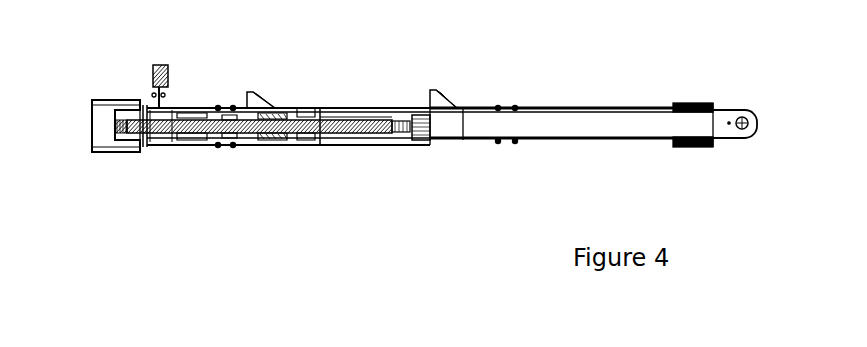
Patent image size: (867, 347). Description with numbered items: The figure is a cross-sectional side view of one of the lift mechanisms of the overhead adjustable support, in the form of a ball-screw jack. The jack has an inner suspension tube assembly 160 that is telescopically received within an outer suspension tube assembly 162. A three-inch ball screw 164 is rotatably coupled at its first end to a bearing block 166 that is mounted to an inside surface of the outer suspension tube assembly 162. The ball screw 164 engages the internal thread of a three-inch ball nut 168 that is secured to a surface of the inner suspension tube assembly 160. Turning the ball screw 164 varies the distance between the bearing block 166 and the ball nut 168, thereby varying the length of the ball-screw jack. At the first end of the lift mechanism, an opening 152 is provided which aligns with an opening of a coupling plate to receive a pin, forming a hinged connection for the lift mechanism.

The opening 152 is at (744, 130).
The inner suspension tube assembly 160 is at (597, 110).
The outer suspension tube assembly 162 is at (468, 140).
The ball screw 164 is at (380, 140).
The bearing block 166 is at (145, 147).
The ball nut 168 is at (276, 103).